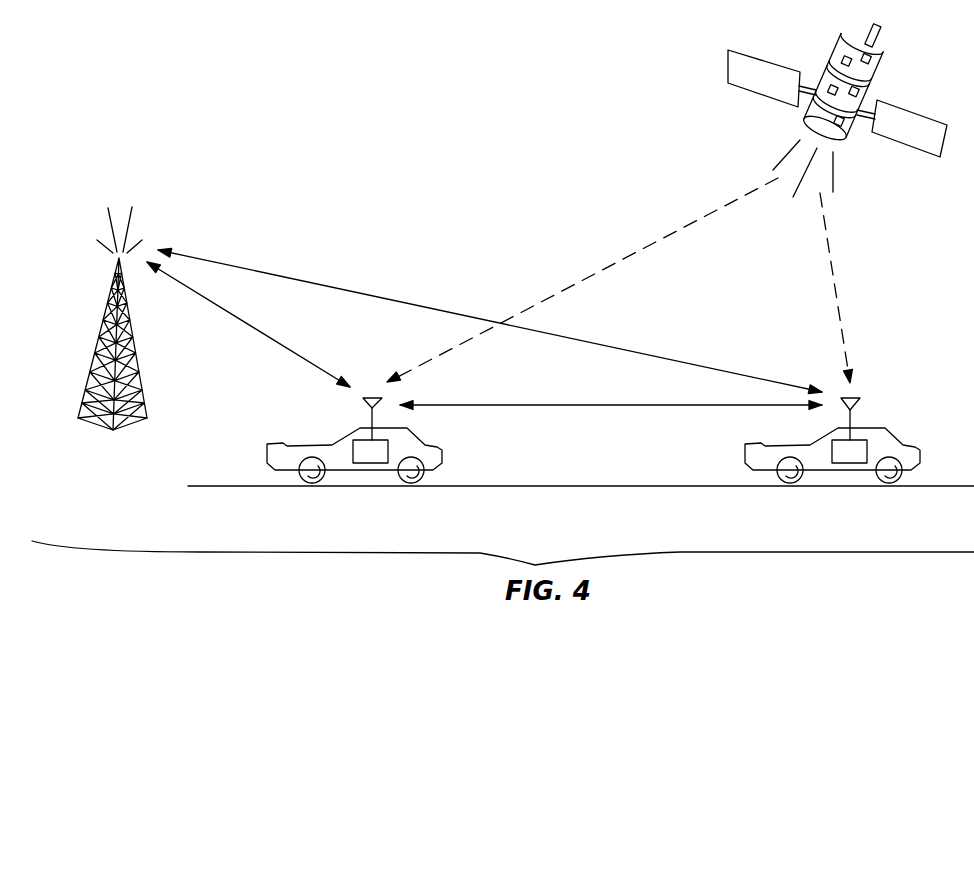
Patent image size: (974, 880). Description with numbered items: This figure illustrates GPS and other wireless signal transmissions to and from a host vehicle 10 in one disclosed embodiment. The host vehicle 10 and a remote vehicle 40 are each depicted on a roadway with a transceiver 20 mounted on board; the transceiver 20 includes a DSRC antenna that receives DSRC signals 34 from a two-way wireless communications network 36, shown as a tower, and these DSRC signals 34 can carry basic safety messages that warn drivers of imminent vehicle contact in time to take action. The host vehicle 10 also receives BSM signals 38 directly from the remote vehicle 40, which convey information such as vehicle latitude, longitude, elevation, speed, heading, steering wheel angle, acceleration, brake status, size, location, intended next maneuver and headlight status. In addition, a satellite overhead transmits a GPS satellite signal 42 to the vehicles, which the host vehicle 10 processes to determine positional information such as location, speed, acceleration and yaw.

The host vehicle 10 is at (910, 448).
The transceiver 20 is at (369, 463).
The DSRC signals 34 is at (257, 330).
The two-way wireless communications network 36 is at (97, 337).
The BSM signals 38 is at (567, 405).
The remote vehicle 40 is at (432, 447).
The GPS satellite signal 42 is at (675, 232).